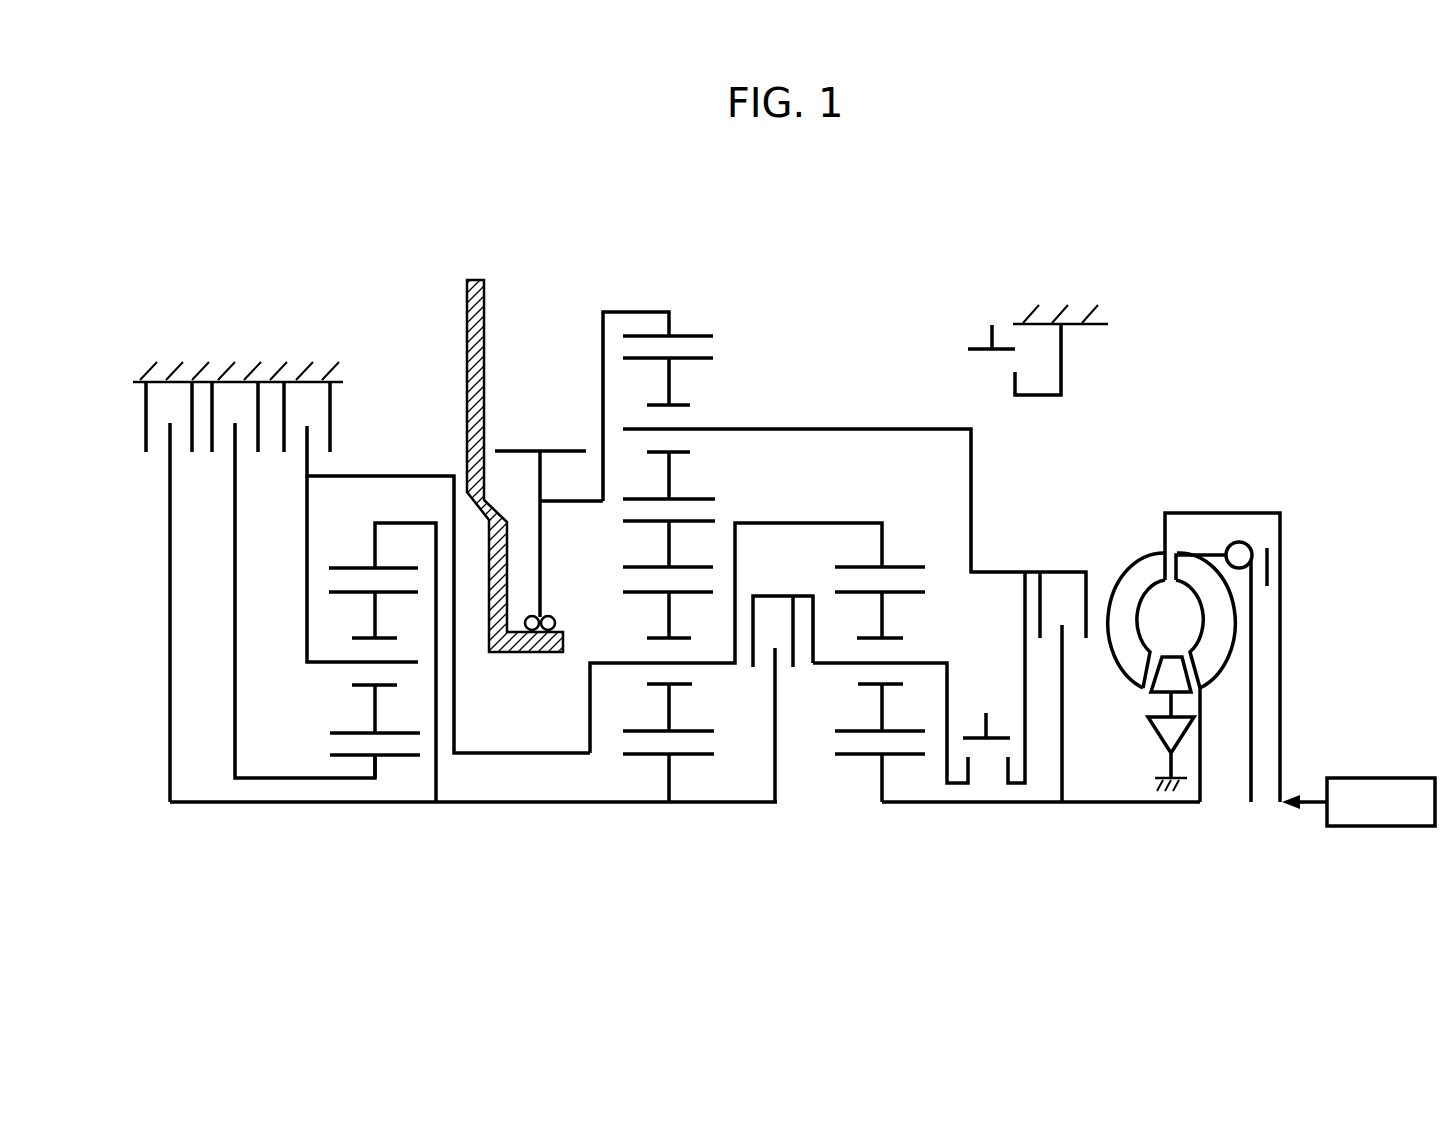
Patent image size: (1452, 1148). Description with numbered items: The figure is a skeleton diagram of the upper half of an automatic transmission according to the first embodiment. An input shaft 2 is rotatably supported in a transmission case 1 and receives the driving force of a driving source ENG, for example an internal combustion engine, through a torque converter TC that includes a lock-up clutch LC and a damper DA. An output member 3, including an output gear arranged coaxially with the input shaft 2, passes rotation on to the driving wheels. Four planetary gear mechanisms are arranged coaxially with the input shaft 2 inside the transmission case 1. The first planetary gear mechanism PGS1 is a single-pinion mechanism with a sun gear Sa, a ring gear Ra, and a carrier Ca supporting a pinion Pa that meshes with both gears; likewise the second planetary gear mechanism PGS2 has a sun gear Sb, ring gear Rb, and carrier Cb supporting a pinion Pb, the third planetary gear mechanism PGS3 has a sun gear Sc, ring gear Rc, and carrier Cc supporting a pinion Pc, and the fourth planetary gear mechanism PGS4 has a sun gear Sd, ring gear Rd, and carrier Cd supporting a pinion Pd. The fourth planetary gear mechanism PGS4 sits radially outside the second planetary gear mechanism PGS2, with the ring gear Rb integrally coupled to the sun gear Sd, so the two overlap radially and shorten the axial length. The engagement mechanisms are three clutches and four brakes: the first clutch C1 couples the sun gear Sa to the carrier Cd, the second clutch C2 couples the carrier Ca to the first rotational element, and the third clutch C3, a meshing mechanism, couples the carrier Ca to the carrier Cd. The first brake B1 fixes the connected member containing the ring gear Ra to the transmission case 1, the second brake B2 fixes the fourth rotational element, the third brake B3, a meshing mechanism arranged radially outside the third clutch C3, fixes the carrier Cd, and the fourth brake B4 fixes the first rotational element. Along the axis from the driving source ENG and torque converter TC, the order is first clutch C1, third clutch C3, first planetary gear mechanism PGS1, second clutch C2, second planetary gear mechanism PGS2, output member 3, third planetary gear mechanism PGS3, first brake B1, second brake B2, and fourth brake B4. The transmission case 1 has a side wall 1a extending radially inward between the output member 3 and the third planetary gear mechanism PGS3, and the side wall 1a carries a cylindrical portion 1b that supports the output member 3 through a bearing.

The transmission case 1 is at (295, 378).
The side wall 1a is at (487, 333).
The cylindrical portion 1b is at (530, 655).
The input shaft 2 is at (1163, 805).
The output member 3 is at (567, 450).
The first brake B1 is at (437, 567).
The second brake B2 is at (293, 580).
The third brake B3 is at (968, 318).
The fourth brake B4 is at (169, 592).
The first clutch C1 is at (1059, 687).
The second clutch C2 is at (783, 699).
The third clutch C3 is at (986, 698).
The first planetary gear mechanism PGS1 is at (904, 703).
The second planetary gear mechanism PGS2 is at (729, 709).
The third planetary gear mechanism PGS3 is at (391, 686).
The fourth planetary gear mechanism PGS4 is at (844, 434).
The sun gear Sa is at (857, 757).
The carrier Ca is at (827, 667).
The ring gear Ra is at (910, 565).
The pinion Pa is at (862, 735).
The sun gear Sb is at (637, 757).
The carrier Cb is at (603, 660).
The ring gear Rb is at (647, 565).
The pinion Pb is at (643, 735).
The sun gear Sc is at (343, 757).
The carrier Cc is at (323, 665).
The ring gear Rc is at (340, 567).
The pinion Pc is at (348, 735).
The sun gear Sd is at (693, 515).
The carrier Cd is at (733, 428).
The ring gear Rd is at (707, 333).
The pinion Pd is at (697, 356).
The torque converter TC is at (1175, 495).
The damper DA is at (1249, 522).
The lock-up clutch LC is at (1297, 556).
The driving source ENG is at (1358, 802).